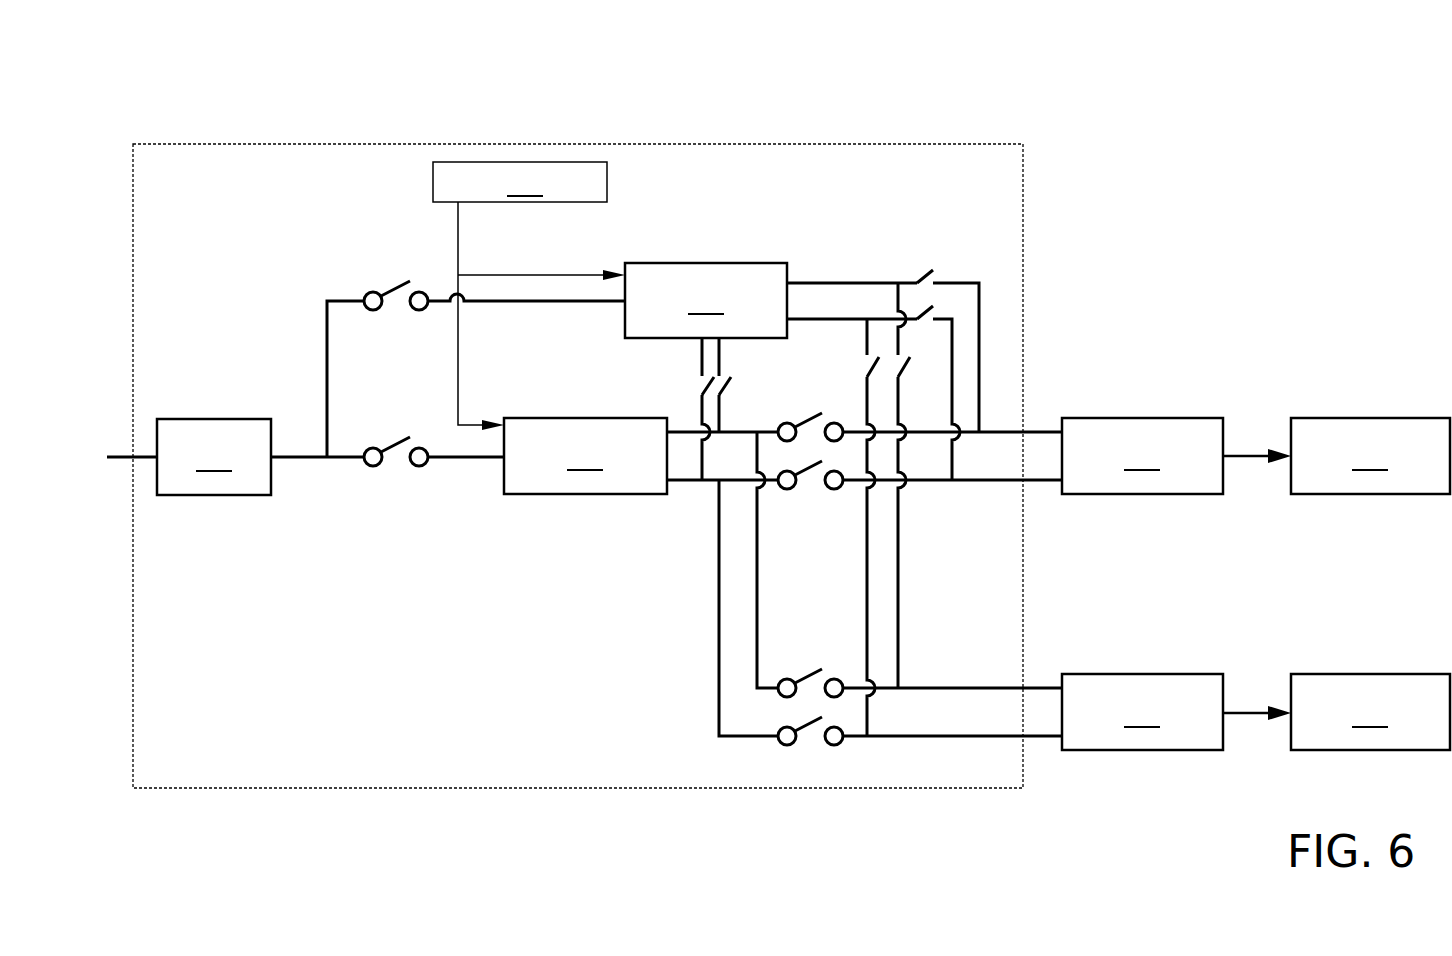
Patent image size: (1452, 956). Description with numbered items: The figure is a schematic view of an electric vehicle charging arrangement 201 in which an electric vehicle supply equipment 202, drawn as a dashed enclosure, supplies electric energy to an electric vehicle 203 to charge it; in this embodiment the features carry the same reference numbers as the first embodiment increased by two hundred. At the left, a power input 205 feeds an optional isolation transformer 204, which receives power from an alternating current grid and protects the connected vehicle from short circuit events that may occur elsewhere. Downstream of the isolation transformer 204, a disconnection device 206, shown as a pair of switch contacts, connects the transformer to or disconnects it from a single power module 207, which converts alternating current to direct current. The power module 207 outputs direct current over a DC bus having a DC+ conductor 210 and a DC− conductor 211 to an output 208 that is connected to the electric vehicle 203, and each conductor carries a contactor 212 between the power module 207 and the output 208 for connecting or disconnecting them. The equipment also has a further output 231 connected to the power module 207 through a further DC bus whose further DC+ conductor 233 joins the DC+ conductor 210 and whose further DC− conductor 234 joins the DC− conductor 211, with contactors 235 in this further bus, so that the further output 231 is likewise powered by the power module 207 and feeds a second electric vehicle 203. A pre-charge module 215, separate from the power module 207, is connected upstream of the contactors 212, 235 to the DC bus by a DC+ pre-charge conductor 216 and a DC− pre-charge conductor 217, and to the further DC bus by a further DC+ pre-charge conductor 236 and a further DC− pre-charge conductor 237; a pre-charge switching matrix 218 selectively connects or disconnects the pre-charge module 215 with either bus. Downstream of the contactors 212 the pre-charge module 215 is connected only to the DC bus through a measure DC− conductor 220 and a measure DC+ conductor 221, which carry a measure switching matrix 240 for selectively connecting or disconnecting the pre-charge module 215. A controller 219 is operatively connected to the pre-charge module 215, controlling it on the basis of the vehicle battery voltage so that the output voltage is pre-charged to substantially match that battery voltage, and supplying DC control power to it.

The electric vehicle charging arrangement 201 is at (160, 111).
The electric vehicle supply equipment 202 is at (272, 143).
The electric vehicle 203 is at (1370, 584).
The isolation transformer 204 is at (260, 457).
The power input 205 is at (122, 455).
The disconnection device 206 is at (398, 285).
The power module 207 is at (585, 456).
The output 208 is at (1176, 456).
The DC+ conductor 210 is at (1035, 430).
The DC− conductor 211 is at (1040, 482).
The contactors 212 is at (813, 413).
The pre-charge module 215 is at (706, 300).
The DC+ pre-charge conductor 216 is at (843, 283).
The DC− pre-charge conductor 217 is at (803, 316).
The pre-charge switching matrix 218 is at (932, 309).
The controller 219 is at (529, 296).
The measure DC− conductor 220 is at (698, 407).
The measure DC+ conductor 221 is at (722, 408).
The further output 231 is at (1176, 712).
The further DC+ conductor 233 is at (973, 687).
The further DC− conductor 234 is at (967, 737).
The contactors 235 is at (807, 680).
The further DC+ pre-charge conductor 236 is at (902, 512).
The further DC− pre-charge conductor 237 is at (870, 562).
The measure switching matrix 240 is at (700, 382).